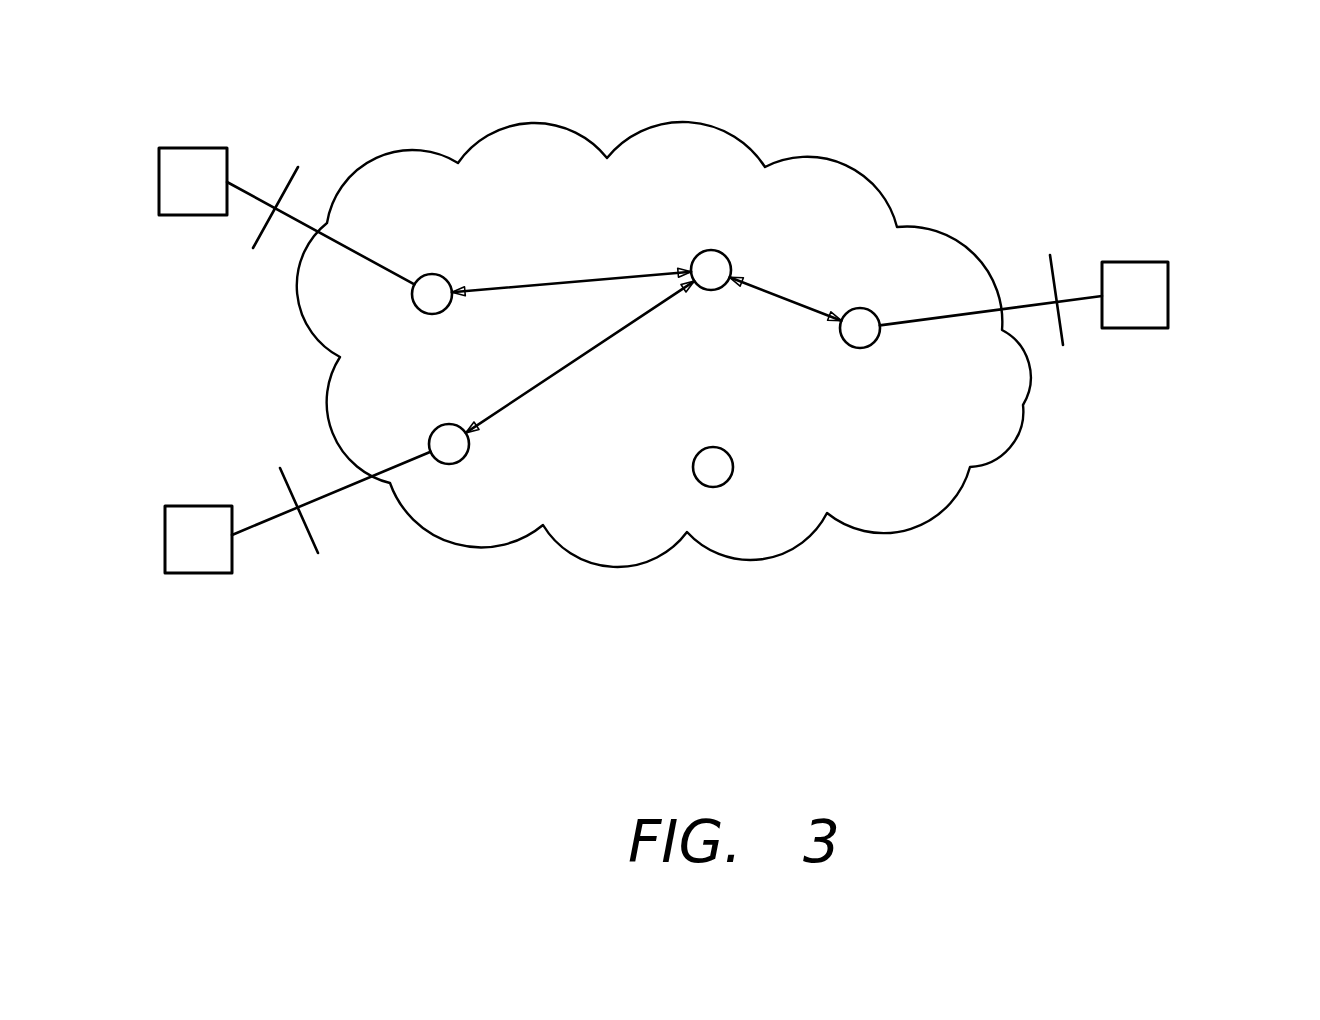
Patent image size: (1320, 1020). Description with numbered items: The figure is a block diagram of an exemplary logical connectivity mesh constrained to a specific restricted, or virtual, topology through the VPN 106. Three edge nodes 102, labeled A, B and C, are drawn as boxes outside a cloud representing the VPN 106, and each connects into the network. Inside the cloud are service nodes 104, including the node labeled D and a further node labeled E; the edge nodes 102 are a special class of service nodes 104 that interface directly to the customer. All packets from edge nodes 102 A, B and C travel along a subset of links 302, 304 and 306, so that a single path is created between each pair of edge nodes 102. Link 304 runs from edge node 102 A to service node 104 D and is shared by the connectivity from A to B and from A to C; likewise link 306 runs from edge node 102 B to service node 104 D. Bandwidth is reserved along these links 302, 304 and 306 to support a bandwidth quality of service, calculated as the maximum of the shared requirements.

The edge node 102 is at (188, 147).
The service node 104 is at (707, 190).
The VPN 106 is at (1023, 405).
The link 302 is at (798, 300).
The link 304 is at (568, 280).
The link 306 is at (618, 342).